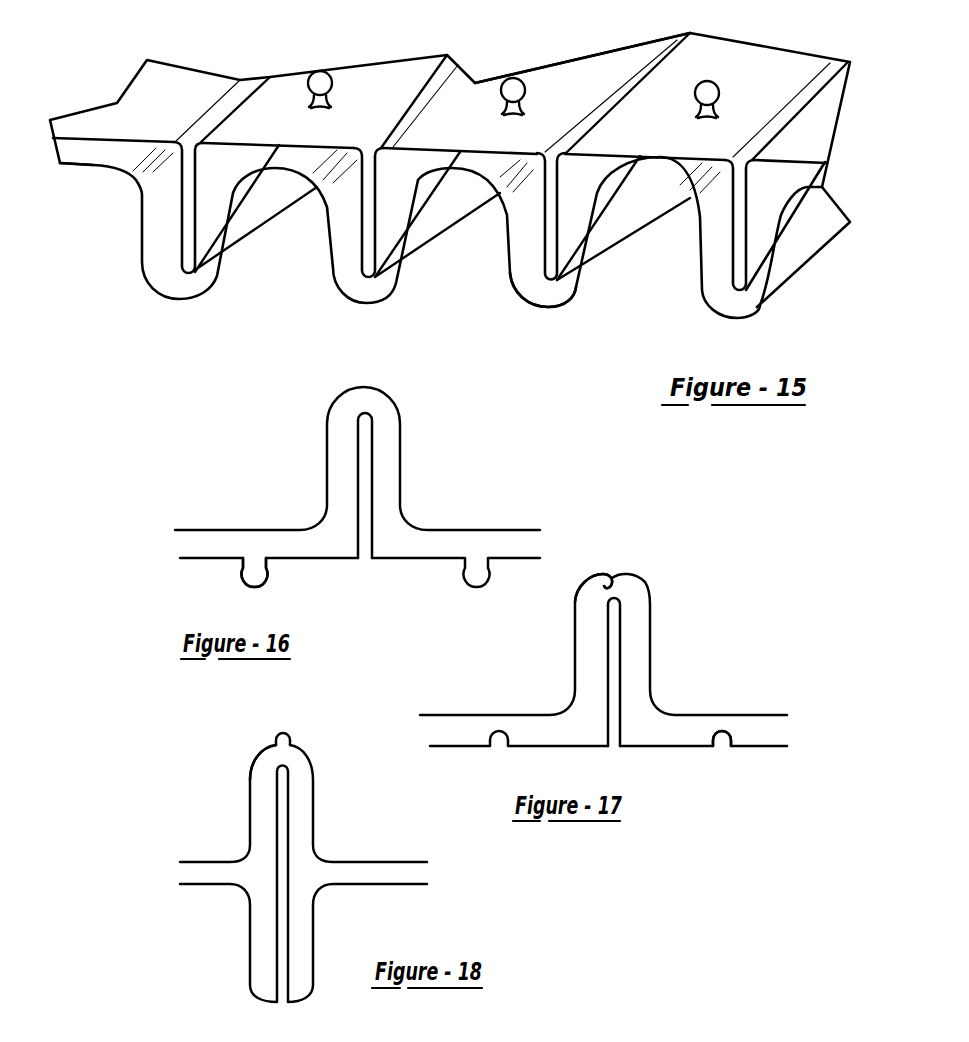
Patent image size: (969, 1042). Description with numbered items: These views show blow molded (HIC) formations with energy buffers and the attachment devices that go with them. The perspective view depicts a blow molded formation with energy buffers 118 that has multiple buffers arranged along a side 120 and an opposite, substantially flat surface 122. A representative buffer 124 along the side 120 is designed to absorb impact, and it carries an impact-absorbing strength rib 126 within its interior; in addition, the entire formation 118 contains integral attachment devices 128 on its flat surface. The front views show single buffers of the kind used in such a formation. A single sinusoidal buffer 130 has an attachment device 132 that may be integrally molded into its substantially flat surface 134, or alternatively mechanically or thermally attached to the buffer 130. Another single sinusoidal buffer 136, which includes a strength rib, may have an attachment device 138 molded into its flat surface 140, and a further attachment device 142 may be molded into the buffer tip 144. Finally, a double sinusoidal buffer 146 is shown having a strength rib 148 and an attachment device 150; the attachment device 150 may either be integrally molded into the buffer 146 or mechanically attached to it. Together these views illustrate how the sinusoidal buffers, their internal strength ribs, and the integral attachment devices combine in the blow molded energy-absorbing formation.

In FIG. 15, the blow molded formation with energy buffers 118 is at (843, 110).
In FIG. 15, the side 120 is at (93, 167).
In FIG. 15, the substantially flat surface 122 is at (663, 143).
In FIG. 15, the buffer 124 is at (563, 308).
In FIG. 15, the strength rib 126 is at (553, 253).
In FIG. 15, the integral attachment devices 128 is at (717, 81).
In FIG. 16, the buffer 130 is at (387, 398).
In FIG. 16, the attachment device 132 is at (253, 588).
In FIG. 16, the substantially flat surface 134 is at (420, 560).
In FIG. 17, the buffer 136 is at (650, 625).
In FIG. 17, the attachment device 138 is at (714, 734).
In FIG. 17, the flat surface 140 is at (762, 746).
In FIG. 17, the attachment device 142 is at (580, 597).
In FIG. 17, the buffer tip 144 is at (614, 574).
In FIG. 18, the double sinusoidal buffer 146 is at (313, 788).
In FIG. 18, the strength rib 148 is at (289, 741).
In FIG. 18, the attachment device 150 is at (276, 738).